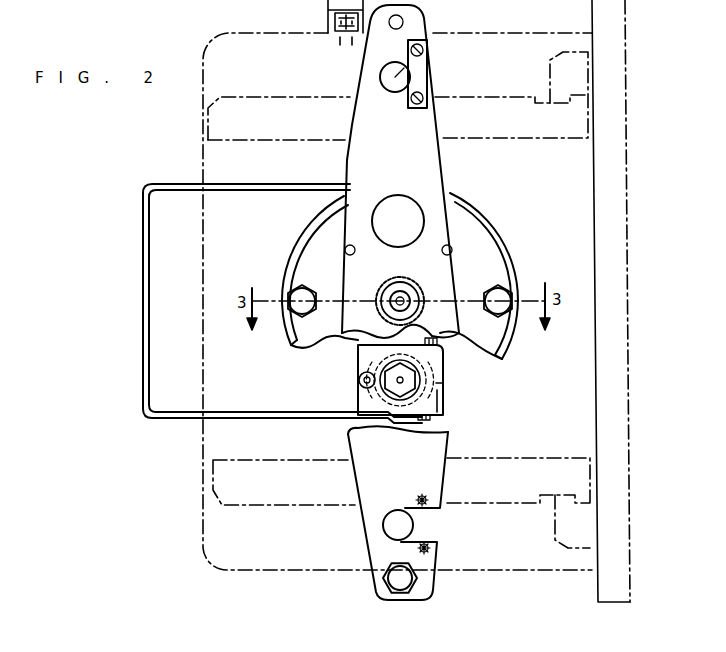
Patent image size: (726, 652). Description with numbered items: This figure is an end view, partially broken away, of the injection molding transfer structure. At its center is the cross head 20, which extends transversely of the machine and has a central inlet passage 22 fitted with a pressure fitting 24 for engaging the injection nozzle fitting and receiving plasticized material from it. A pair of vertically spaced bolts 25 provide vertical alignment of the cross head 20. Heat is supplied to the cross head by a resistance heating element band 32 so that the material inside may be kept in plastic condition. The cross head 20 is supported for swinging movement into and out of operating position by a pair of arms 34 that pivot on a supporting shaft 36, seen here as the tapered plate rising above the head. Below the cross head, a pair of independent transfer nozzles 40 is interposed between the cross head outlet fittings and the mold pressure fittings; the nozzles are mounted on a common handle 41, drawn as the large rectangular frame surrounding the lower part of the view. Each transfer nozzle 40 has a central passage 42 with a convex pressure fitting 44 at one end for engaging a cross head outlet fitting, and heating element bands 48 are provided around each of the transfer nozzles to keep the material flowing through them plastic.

The cross head 20 is at (306, 270).
The central inlet passage 22 is at (394, 285).
The pressure fitting 24 is at (392, 294).
The bolts 25 is at (297, 289).
The resistance heating element band 32 is at (488, 222).
The arms 34 is at (440, 180).
The supporting shaft 36 is at (384, 82).
The transfer nozzles 40 is at (365, 391).
The handle 41 is at (183, 183).
The central passage 42 is at (441, 368).
The convex pressure fitting 44 is at (441, 394).
The heating element bands 48 is at (357, 356).